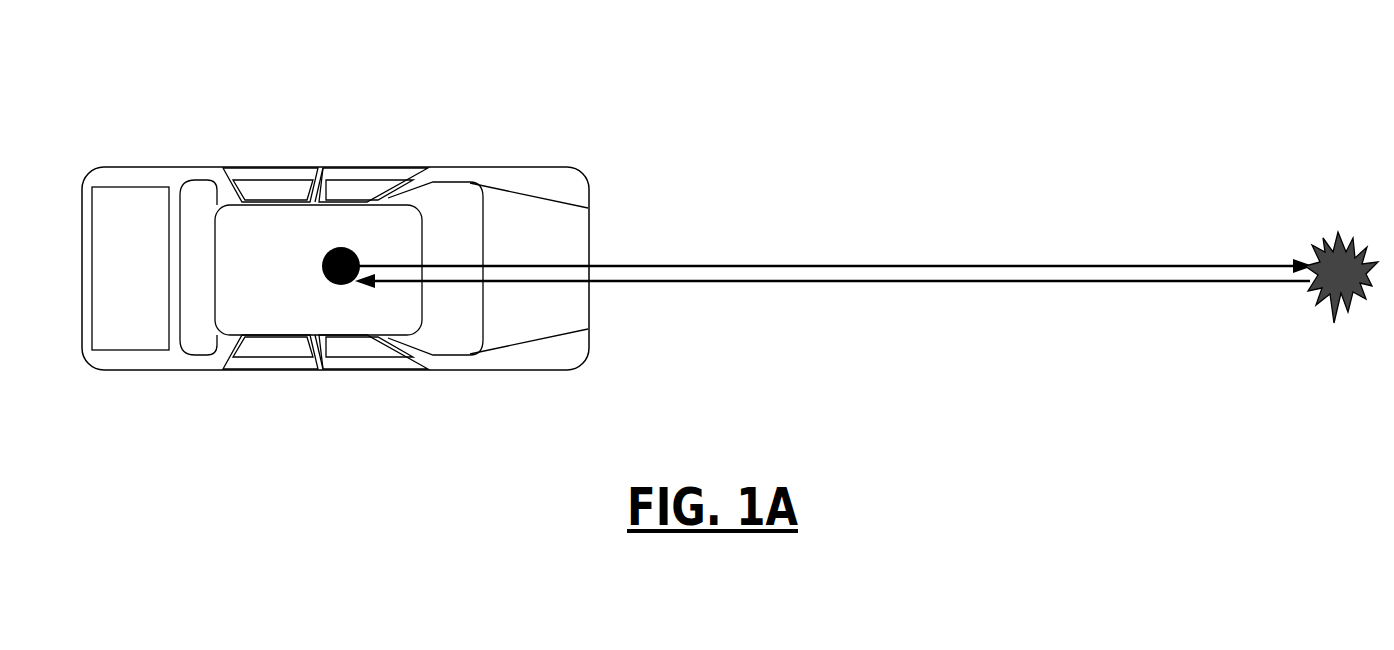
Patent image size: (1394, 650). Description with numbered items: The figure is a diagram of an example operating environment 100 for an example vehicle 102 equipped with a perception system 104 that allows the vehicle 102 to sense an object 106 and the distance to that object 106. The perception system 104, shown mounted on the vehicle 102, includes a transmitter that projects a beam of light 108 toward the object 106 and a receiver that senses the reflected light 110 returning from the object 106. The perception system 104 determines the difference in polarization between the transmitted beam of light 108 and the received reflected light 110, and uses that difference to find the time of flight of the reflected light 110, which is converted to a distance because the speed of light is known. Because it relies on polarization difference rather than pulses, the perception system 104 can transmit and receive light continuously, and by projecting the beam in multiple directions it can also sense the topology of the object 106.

The operating environment 100 is at (548, 73).
The vehicle 102 is at (180, 178).
The perception system 104 is at (321, 268).
The object 106 is at (1357, 258).
The beam of light 108 is at (773, 265).
The reflected light 110 is at (800, 282).